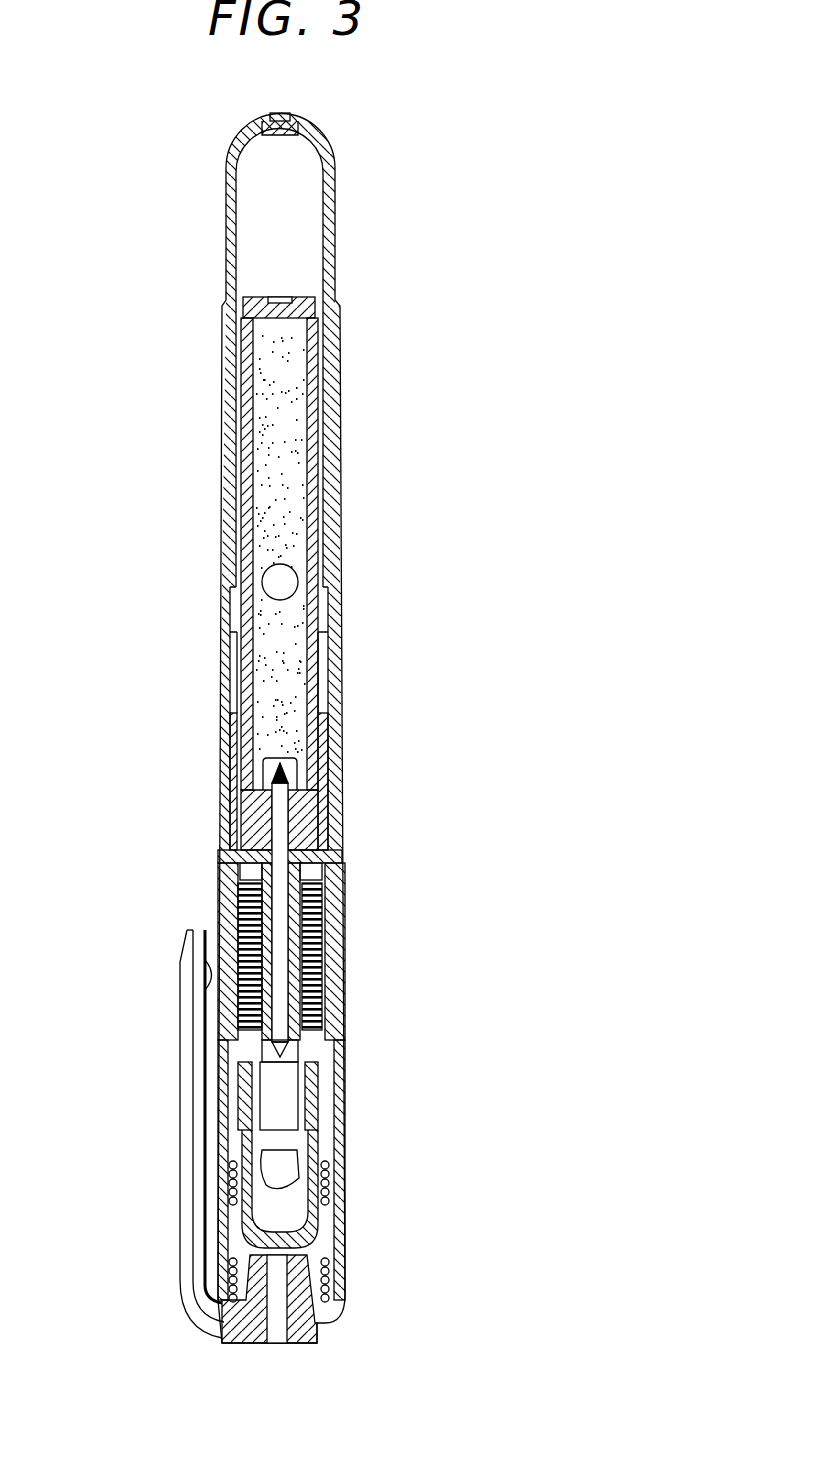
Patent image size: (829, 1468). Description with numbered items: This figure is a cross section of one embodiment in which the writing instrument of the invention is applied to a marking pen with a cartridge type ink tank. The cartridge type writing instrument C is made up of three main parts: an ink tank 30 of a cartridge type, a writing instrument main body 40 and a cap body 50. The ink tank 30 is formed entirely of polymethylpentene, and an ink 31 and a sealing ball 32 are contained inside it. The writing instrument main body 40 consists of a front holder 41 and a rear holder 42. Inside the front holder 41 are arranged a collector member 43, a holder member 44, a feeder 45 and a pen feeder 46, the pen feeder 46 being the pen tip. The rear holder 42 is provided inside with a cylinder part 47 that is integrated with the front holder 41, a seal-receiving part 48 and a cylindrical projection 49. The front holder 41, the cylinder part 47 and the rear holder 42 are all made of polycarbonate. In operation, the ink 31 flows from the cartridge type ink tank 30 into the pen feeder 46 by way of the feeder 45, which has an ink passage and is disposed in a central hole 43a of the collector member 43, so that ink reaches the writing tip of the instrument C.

The cartridge type writing instrument C is at (350, 354).
The ink tank 30 is at (238, 669).
The ink 31 is at (300, 410).
The sealing ball 32 is at (284, 576).
The writing instrument main body 40 is at (213, 815).
The front holder 41 is at (224, 902).
The rear holder 42 is at (343, 677).
The collector member 43 is at (311, 893).
The central hole 43a is at (292, 975).
The holder member 44 is at (232, 1082).
The feeder 45 is at (283, 940).
The pen feeder 46 is at (243, 1153).
The cylinder part 47 is at (233, 743).
The seal-receiving part 48 is at (237, 797).
The cylindrical projection 49 is at (244, 838).
The cap body 50 is at (227, 1272).